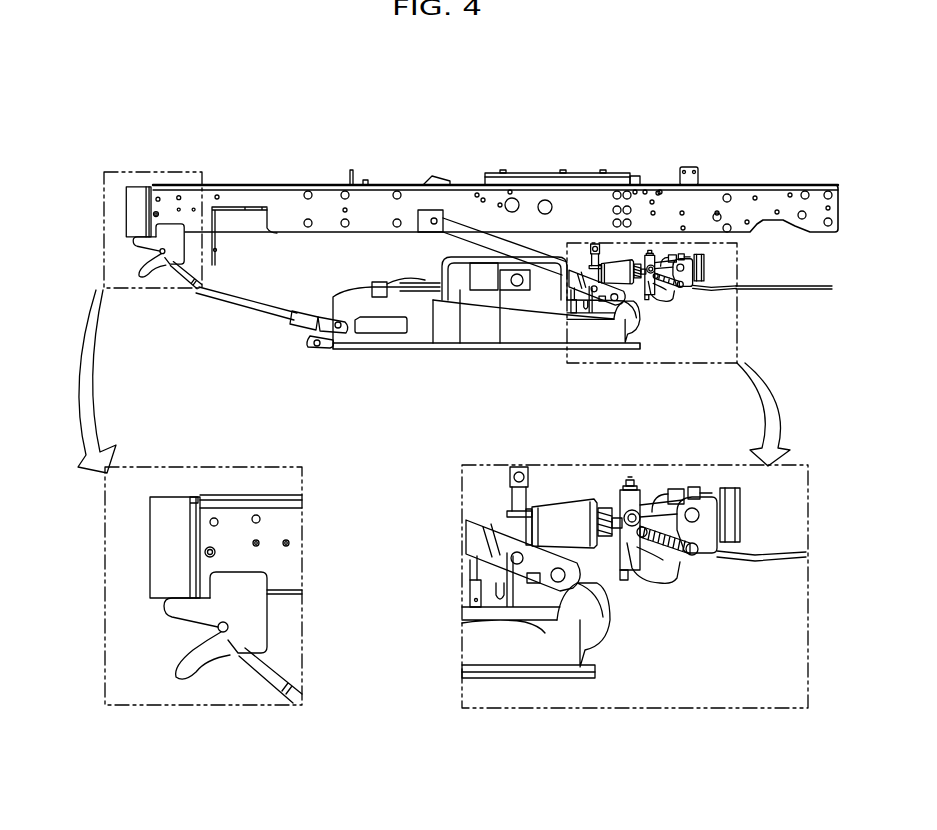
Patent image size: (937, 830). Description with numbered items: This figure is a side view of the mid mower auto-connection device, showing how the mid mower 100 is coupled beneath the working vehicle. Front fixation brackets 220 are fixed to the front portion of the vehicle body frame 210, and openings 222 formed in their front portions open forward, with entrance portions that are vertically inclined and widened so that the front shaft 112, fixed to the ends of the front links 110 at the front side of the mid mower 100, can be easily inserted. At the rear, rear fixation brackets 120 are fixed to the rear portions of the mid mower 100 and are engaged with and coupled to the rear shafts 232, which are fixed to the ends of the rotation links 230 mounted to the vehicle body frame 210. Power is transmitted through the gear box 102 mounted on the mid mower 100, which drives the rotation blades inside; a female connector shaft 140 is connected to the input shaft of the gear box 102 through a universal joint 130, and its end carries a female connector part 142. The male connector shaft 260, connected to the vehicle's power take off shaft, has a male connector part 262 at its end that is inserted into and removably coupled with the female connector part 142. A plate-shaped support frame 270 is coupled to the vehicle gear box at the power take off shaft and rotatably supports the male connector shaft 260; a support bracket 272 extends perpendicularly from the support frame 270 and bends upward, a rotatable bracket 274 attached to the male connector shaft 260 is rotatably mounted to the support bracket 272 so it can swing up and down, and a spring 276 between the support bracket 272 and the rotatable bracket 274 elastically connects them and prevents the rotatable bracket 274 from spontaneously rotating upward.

The mid mower 100 is at (412, 372).
The gear box 102 is at (448, 236).
The front links 110 is at (248, 307).
The front shaft 112 is at (167, 273).
The rear fixation brackets 120 is at (633, 315).
The universal joint 130 is at (507, 310).
The female connector shaft 140 is at (482, 513).
The female connector part 142 is at (558, 517).
The vehicle body frame 210 is at (378, 196).
The front fixation brackets 220 is at (169, 236).
The openings 222 is at (143, 253).
The rotation links 230 is at (512, 256).
The rear shafts 232 is at (613, 305).
The male connector shaft 260 is at (618, 512).
The male connector part 262 is at (663, 565).
The support frame 270 is at (783, 550).
The support bracket 272 is at (725, 547).
The rotatable bracket 274 is at (630, 490).
The spring 276 is at (707, 553).